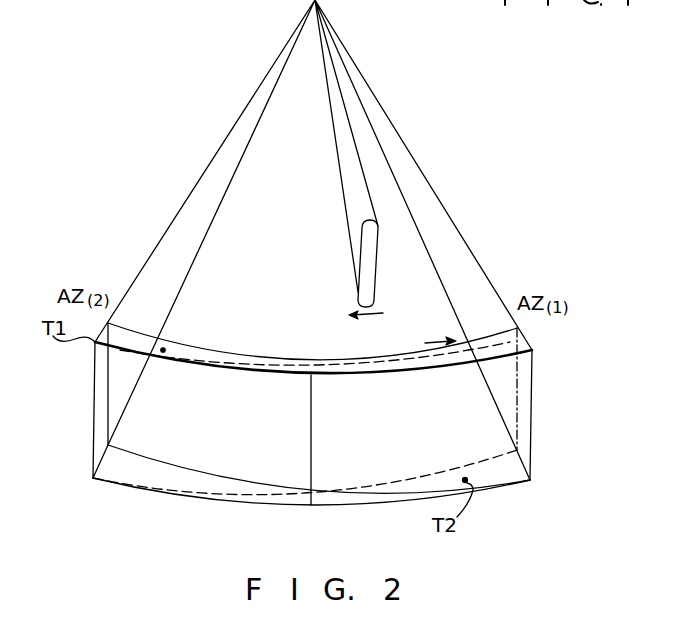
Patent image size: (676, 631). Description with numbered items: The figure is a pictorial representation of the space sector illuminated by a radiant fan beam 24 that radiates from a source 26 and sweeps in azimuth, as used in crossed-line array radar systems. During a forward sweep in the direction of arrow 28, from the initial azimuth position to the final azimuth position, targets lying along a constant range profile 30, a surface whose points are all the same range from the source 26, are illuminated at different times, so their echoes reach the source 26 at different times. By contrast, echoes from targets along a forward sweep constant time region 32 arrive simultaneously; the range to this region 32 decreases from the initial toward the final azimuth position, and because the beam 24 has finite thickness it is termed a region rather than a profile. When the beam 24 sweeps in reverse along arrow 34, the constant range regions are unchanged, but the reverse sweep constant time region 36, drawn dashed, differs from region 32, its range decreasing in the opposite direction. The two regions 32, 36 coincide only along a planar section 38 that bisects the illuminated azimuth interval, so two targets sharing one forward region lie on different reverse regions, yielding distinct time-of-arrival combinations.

The fan beam 24 is at (371, 237).
The source 26 is at (292, 0).
The forward sweep direction arrow 28 is at (383, 313).
The constant range profile 30 is at (102, 410).
The forward sweep constant time region 32 is at (213, 358).
The reverse sweep direction arrow 34 is at (425, 343).
The reverse sweep constant time region 36 is at (352, 368).
The planar section 38 is at (310, 436).